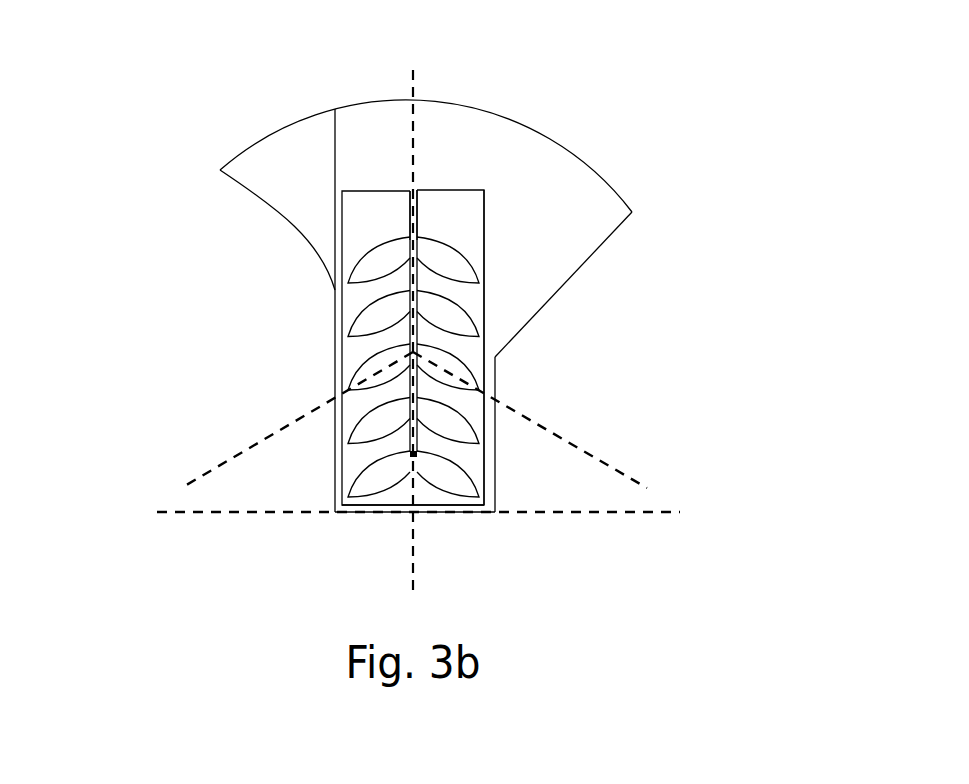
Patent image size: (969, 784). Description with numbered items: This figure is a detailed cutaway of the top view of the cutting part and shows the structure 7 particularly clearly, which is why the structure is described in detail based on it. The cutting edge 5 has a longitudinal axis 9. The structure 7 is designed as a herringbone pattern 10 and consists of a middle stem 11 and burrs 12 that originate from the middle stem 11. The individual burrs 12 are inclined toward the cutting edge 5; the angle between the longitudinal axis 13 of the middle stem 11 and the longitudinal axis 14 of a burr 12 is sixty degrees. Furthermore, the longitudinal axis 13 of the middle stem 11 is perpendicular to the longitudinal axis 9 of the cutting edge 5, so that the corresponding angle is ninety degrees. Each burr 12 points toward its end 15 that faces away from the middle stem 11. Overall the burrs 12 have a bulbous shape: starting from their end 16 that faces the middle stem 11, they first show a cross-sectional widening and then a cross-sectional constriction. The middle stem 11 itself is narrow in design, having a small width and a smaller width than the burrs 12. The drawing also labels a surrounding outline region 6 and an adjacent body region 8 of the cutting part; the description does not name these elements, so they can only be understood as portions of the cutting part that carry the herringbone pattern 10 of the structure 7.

The cutting edge 5 is at (390, 512).
The head 6 is at (475, 157).
The structure 7 is at (260, 367).
The shank body 8 is at (467, 212).
The longitudinal axis of the cutting edge 9 is at (657, 513).
The herringbone pattern 10 is at (352, 369).
The middle stem 11 is at (412, 208).
The burr 12 is at (367, 320).
The longitudinal axis of the middle stem 13 is at (412, 77).
The longitudinal axis of a burr 14 is at (193, 482).
The end of burr facing away from the middle stem 15 is at (482, 337).
The end of burr facing the middle stem 16 is at (420, 230).